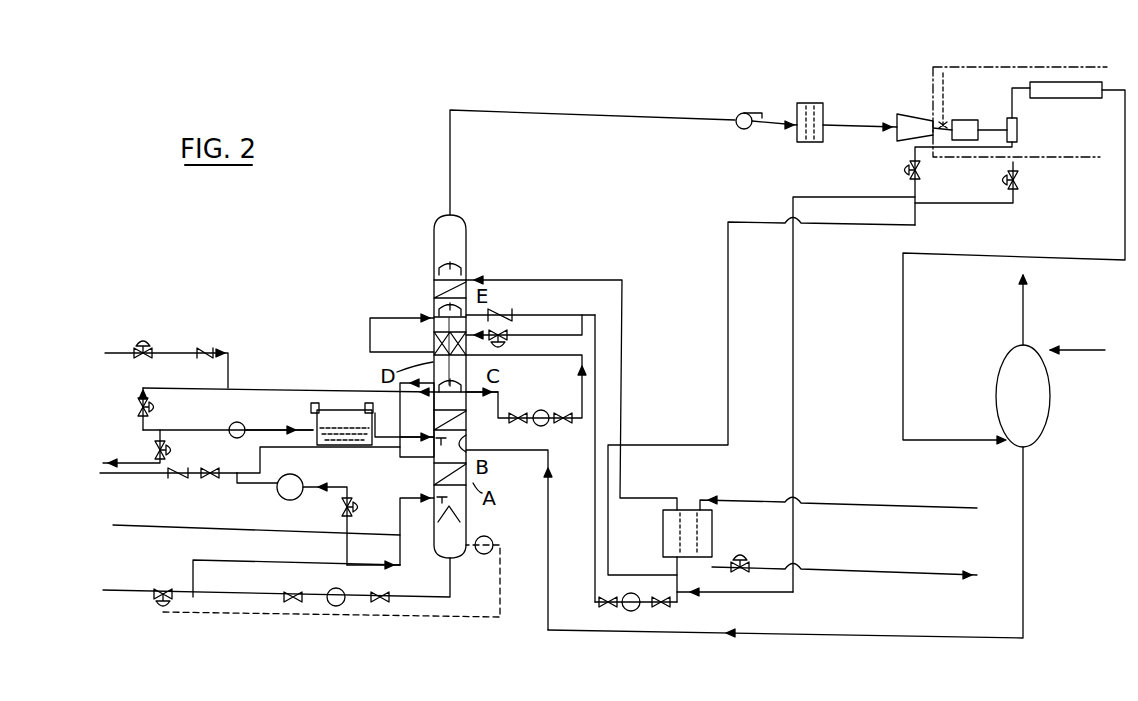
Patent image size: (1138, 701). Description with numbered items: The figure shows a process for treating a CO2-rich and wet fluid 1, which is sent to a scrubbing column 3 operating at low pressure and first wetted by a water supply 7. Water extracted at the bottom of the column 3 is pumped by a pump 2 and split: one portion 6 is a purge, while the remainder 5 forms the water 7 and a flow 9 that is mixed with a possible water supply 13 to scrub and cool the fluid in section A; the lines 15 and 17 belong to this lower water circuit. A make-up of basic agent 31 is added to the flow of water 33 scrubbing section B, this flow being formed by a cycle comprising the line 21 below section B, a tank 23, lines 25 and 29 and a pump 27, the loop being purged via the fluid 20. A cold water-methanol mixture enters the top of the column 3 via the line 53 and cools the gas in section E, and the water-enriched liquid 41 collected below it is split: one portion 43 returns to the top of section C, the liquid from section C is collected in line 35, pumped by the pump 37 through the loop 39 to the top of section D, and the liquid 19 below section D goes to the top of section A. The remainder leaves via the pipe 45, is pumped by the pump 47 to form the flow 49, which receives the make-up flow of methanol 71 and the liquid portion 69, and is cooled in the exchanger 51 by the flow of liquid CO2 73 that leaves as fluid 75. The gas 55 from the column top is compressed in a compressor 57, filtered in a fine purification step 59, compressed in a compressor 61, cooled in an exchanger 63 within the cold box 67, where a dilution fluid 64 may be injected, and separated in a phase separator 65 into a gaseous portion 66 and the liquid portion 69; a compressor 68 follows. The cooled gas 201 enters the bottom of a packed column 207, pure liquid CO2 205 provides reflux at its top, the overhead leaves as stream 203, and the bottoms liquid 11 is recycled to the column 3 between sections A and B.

The CO2-rich and wet fluid 1 is at (150, 527).
The pump 2 is at (336, 588).
The scrubbing column 3 is at (398, 258).
The remainder 5 is at (262, 562).
The portion used as a purge 6 is at (155, 592).
The water supply 7 is at (402, 562).
The flow 9 is at (350, 537).
The methanol-containing purge flow of NO2 11 is at (548, 530).
The possible water supply 13 is at (163, 476).
The line 15 is at (333, 448).
The line 17 is at (402, 459).
The liquid formed below section D 19 is at (417, 418).
The fluid 20 is at (130, 462).
The line 21 is at (428, 443).
The tank 23 is at (345, 407).
The line 25 is at (278, 430).
The pump 27 is at (237, 422).
The line 29 is at (170, 452).
The make-up of basic agent 31 is at (232, 363).
The flow of water 33 is at (293, 388).
The line 35 is at (488, 396).
The pump 37 is at (545, 426).
The line 39 is at (580, 402).
The liquid 41 is at (513, 310).
The portion 43 is at (553, 341).
The pipe 45 is at (595, 527).
The pump 47 is at (606, 598).
The flow 49 is at (692, 590).
The exchanger 51 is at (663, 542).
The line 53 is at (624, 395).
The gas 55 is at (608, 112).
The compressor 57 is at (747, 112).
The fine purification step 59 is at (795, 128).
The compressor 61 is at (903, 115).
The exchanger 63 is at (979, 121).
The dilution fluid 64 is at (945, 74).
The phase separator 65 is at (1018, 135).
The gaseous portion 66 is at (1016, 100).
The cold box 67 is at (937, 66).
The compressor 68 is at (1078, 82).
The liquid portion 69 is at (910, 182).
The make-up flow of methanol 71 is at (950, 207).
The flow of liquid CO2 73 is at (918, 507).
The fluid 75 is at (930, 575).
The cooled gas 201 is at (962, 440).
The line 203 is at (1020, 300).
The pure liquid CO2 205 is at (1076, 350).
The packed column 207 is at (997, 393).